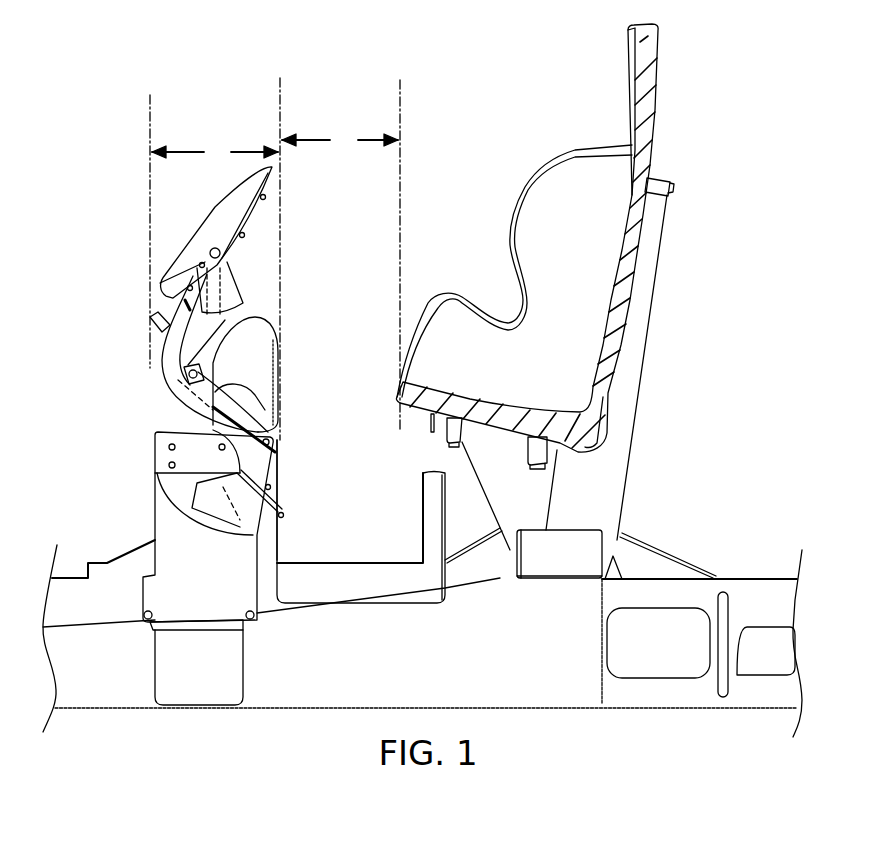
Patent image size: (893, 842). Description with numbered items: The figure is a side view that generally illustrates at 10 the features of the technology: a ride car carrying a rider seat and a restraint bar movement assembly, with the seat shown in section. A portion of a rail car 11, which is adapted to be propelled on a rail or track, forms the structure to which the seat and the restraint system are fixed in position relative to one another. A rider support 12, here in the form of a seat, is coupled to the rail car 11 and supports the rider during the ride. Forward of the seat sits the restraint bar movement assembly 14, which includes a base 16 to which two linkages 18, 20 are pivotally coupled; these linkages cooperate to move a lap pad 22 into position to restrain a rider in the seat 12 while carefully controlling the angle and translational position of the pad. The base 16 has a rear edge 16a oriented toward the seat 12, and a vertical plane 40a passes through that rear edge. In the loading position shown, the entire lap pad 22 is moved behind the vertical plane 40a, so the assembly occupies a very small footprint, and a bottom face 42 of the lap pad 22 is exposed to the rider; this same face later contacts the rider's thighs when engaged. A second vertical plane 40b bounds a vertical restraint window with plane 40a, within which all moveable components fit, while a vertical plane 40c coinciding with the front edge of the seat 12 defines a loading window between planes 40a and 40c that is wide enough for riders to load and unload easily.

The features of the technology 10 is at (171, 82).
The rail car 11 is at (590, 607).
The rider support 12 is at (496, 205).
The restraint bar movement assembly 14 is at (138, 338).
The base 16 is at (267, 550).
The rear edge 16a is at (280, 463).
The linkage 18 is at (160, 420).
The linkage 20 is at (233, 418).
The lap pad 22 is at (232, 193).
The vertical plane 40a is at (282, 110).
The vertical plane 40b is at (150, 125).
The vertical plane 40c is at (402, 110).
The bottom face 42 is at (260, 224).